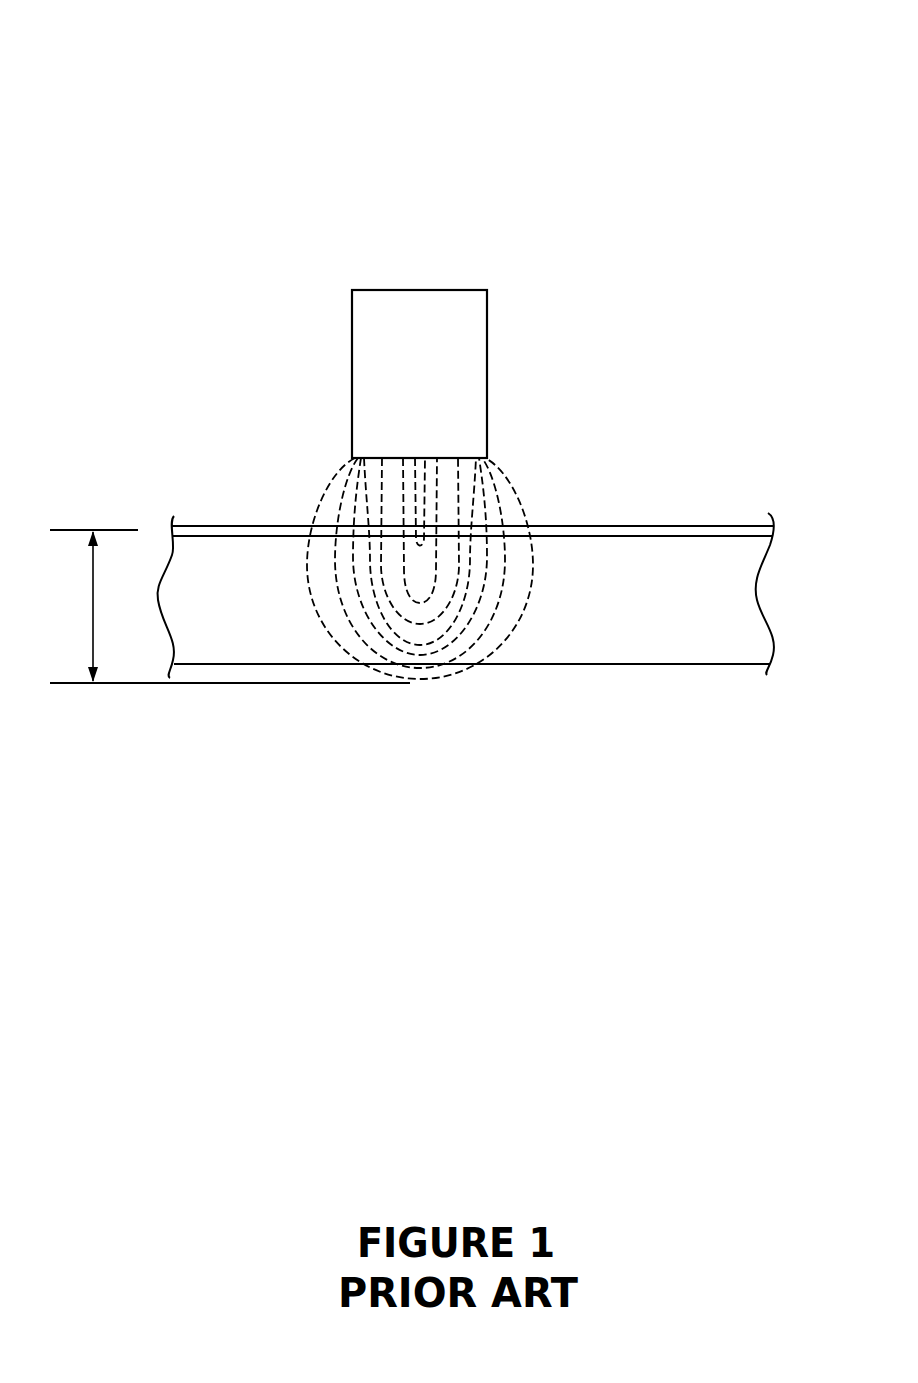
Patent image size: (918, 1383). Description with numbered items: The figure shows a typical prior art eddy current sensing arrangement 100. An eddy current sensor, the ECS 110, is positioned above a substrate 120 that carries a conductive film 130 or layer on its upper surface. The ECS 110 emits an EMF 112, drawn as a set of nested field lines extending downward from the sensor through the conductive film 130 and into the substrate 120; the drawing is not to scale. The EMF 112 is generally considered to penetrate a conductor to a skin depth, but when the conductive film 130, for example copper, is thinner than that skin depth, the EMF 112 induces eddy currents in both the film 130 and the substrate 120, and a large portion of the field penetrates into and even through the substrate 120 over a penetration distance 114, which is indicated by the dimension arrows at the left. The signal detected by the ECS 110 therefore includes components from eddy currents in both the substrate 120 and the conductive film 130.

The prior art eddy current sensing system 100 is at (452, 56).
The ECS 110 is at (463, 289).
The EMF 112 is at (513, 490).
The penetration distance 114 is at (230, 606).
The substrate 120 is at (700, 664).
The conductive film 130 is at (688, 532).